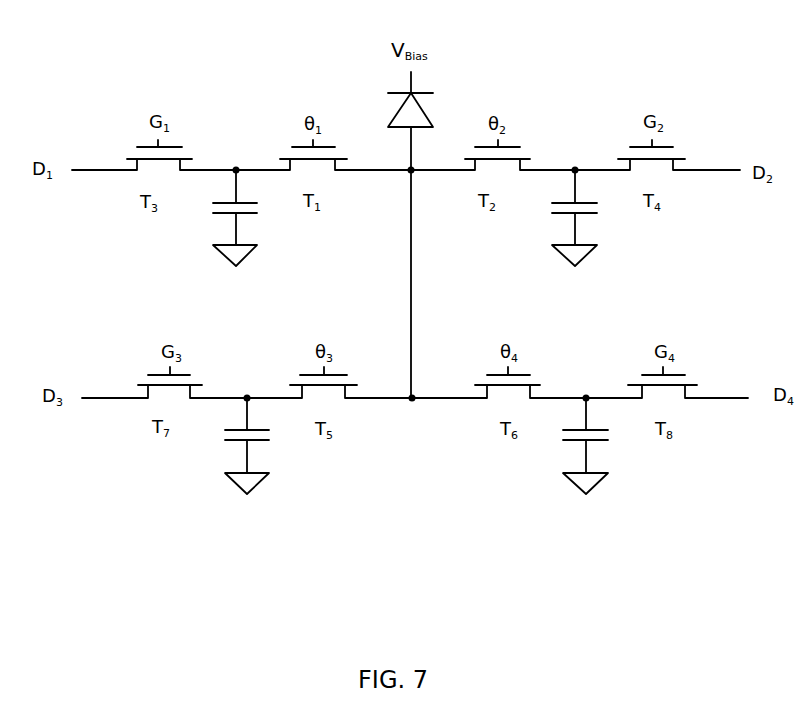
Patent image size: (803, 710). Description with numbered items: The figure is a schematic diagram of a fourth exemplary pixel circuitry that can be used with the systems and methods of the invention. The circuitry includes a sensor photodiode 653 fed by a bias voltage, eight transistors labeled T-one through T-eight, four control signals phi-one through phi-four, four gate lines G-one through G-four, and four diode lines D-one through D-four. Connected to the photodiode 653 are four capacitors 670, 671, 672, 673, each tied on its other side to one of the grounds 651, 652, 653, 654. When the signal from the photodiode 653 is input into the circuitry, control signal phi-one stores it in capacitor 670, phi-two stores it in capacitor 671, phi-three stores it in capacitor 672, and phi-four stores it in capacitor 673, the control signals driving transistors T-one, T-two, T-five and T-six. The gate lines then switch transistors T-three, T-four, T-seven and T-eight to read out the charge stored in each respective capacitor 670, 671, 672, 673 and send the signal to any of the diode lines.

The capacitor 670 is at (213, 208).
The capacitor 671 is at (552, 208).
The capacitor 672 is at (223, 437).
The capacitor 673 is at (563, 438).
The ground 651 is at (247, 255).
The ground 652 is at (597, 253).
The sensor photodiode 653 is at (432, 115).
The ground 654 is at (608, 483).